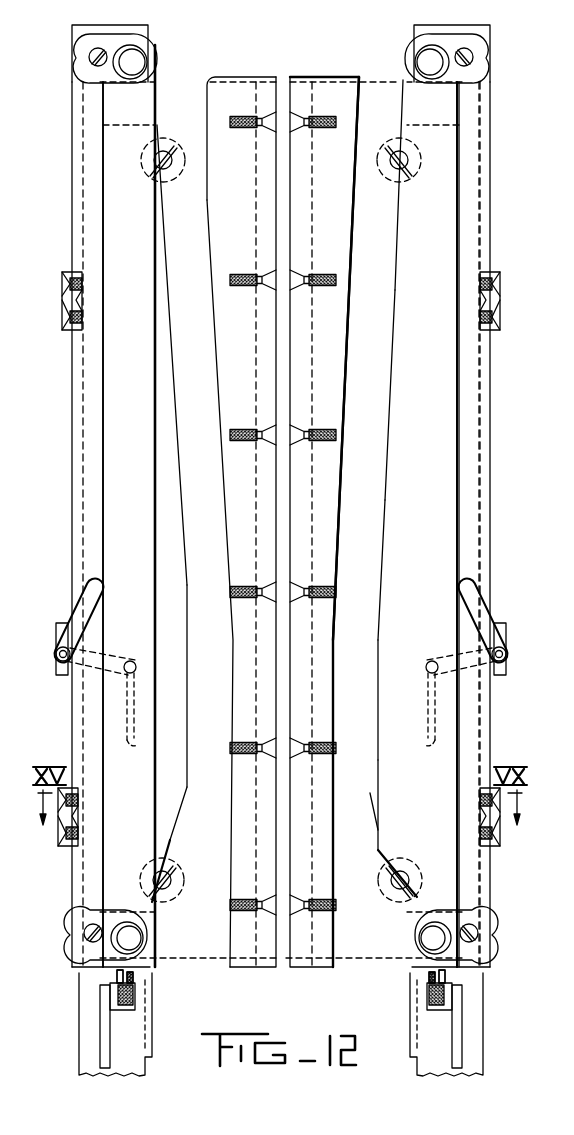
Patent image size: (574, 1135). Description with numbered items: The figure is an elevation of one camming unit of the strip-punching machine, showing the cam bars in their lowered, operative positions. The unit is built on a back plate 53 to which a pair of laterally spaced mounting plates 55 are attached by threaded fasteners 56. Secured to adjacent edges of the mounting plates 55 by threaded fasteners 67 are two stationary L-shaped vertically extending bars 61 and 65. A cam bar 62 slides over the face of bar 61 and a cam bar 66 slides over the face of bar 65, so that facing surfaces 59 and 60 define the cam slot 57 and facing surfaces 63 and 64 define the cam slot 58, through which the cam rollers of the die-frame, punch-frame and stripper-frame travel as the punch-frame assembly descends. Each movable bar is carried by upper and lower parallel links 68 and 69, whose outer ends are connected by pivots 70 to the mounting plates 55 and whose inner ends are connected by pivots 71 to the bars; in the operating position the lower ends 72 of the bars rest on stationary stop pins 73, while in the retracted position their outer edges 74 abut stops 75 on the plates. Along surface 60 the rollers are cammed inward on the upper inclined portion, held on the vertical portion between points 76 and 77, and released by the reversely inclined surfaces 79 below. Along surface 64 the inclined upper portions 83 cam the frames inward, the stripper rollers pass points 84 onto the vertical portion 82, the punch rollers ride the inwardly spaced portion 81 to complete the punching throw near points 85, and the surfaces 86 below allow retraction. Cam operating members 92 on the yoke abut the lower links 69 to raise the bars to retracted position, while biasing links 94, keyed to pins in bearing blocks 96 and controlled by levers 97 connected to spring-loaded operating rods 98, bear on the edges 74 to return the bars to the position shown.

The back plate 53 is at (483, 210).
The mounting plates 55 is at (72, 174).
The threaded fasteners 56 is at (148, 172).
The cam slot 57 is at (230, 522).
The cam slot 58 is at (345, 522).
The camming surface 59 is at (212, 299).
The camming surface 60 is at (171, 348).
The vertically extending bar 61 is at (207, 194).
The cam bar 62 is at (103, 232).
The camming surface 63 is at (352, 232).
The camming surface 64 is at (396, 268).
The vertically extending bar 65 is at (350, 100).
The cam bar 66 is at (457, 258).
The threaded fasteners 67 is at (242, 275).
The upper parallel links 68 is at (77, 45).
The lower parallel links 69 is at (72, 955).
The pivots 70 is at (82, 70).
The pivots 71 is at (146, 54).
The lower ends 72 is at (150, 974).
The stop pins 73 is at (114, 977).
The outer edges 74 is at (103, 431).
The stops 75 is at (66, 330).
The points 76 is at (188, 572).
The points 77 is at (187, 790).
The surfaces 79 is at (168, 845).
The portion 81 is at (375, 693).
The portion 82 is at (378, 768).
The inclined upper portions 83 is at (391, 357).
The points 84 is at (379, 528).
The points 85 is at (370, 797).
The surfaces 86 is at (374, 830).
The cam operating members 92 is at (152, 1008).
The links 94 is at (102, 617).
The bearing block 96 is at (57, 624).
The lever 97 is at (118, 660).
The operating rod 98 is at (137, 748).